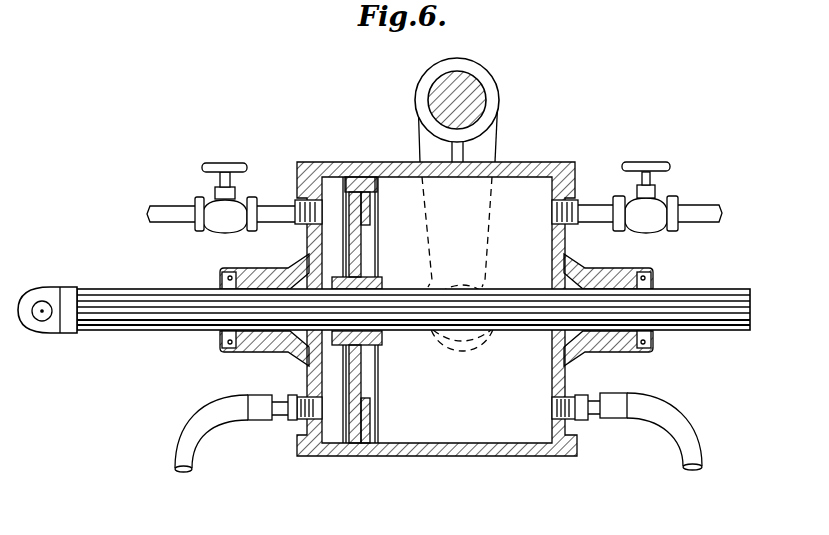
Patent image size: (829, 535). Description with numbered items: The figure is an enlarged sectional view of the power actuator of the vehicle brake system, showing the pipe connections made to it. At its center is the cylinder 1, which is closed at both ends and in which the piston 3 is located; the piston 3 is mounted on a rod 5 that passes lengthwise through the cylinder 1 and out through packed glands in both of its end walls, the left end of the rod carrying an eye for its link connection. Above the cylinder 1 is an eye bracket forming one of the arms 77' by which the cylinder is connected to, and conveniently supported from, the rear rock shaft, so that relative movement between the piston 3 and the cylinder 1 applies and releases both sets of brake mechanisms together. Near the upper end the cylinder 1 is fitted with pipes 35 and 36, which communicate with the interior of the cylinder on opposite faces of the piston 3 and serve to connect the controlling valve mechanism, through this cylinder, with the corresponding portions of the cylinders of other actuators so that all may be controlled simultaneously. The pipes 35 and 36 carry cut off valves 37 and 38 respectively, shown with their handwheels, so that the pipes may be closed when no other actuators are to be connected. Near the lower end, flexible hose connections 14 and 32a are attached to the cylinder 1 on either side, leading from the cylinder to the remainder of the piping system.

The cylinder 1 is at (519, 173).
The piston 3 is at (344, 200).
The piston rod 5 is at (138, 298).
The arms 77' is at (443, 204).
The pipe 35 is at (161, 211).
The pipe 36 is at (702, 208).
The cut off valve 37 is at (222, 223).
The cut off valve 38 is at (648, 221).
The hose 14 is at (206, 412).
The hose 32a is at (687, 437).